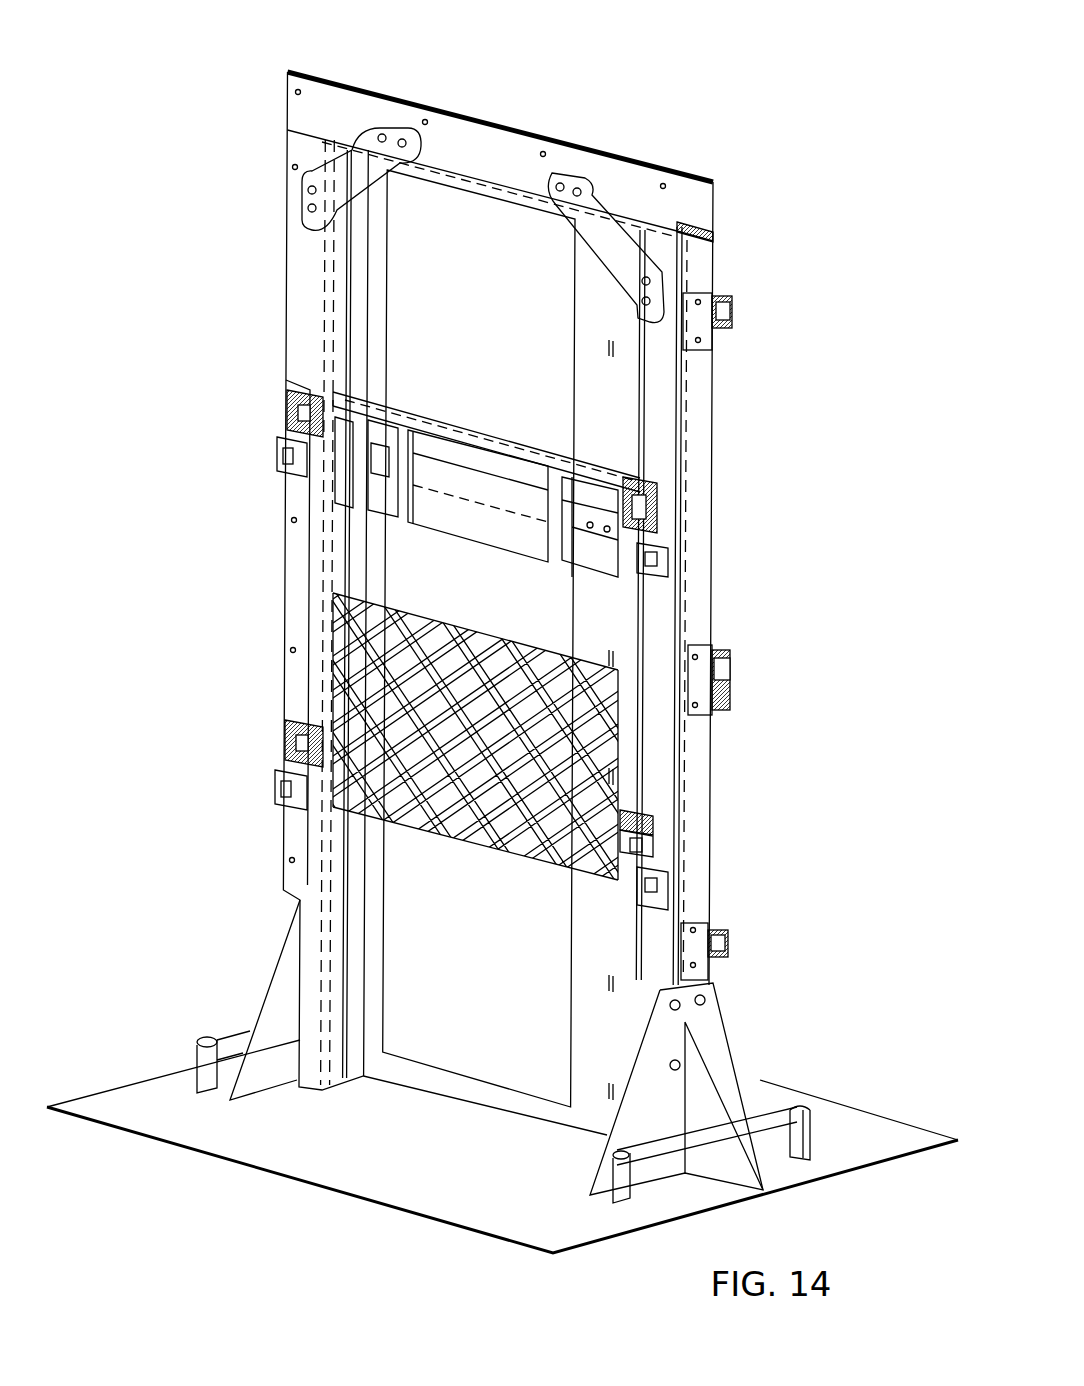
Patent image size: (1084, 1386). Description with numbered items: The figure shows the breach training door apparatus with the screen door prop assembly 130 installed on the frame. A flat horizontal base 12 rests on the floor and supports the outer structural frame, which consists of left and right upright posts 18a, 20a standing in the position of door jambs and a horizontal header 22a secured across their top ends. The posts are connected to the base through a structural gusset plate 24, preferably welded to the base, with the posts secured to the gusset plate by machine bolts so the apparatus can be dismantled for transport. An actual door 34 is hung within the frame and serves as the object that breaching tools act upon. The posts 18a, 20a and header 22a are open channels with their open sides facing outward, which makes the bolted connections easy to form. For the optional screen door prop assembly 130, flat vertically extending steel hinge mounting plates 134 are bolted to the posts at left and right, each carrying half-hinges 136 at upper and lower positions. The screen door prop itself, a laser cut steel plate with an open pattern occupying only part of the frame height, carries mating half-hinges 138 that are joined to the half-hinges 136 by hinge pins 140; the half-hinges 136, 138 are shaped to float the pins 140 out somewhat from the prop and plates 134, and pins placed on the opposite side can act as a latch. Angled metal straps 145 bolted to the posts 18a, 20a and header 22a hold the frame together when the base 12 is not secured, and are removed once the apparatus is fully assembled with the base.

The base 12 is at (373, 1187).
The upright post 18a is at (292, 252).
The upright post 20a is at (700, 388).
The header 22a is at (490, 127).
The gusset plate 24 is at (730, 1050).
The door 34 is at (607, 408).
The screen door prop assembly 130 is at (765, 582).
The hinge mounting plate 134 is at (293, 560).
The half-hinge 136 is at (655, 523).
The half-hinge 138 is at (653, 833).
The hinge pin 140 is at (647, 848).
The angled metal strap 145 is at (363, 147).